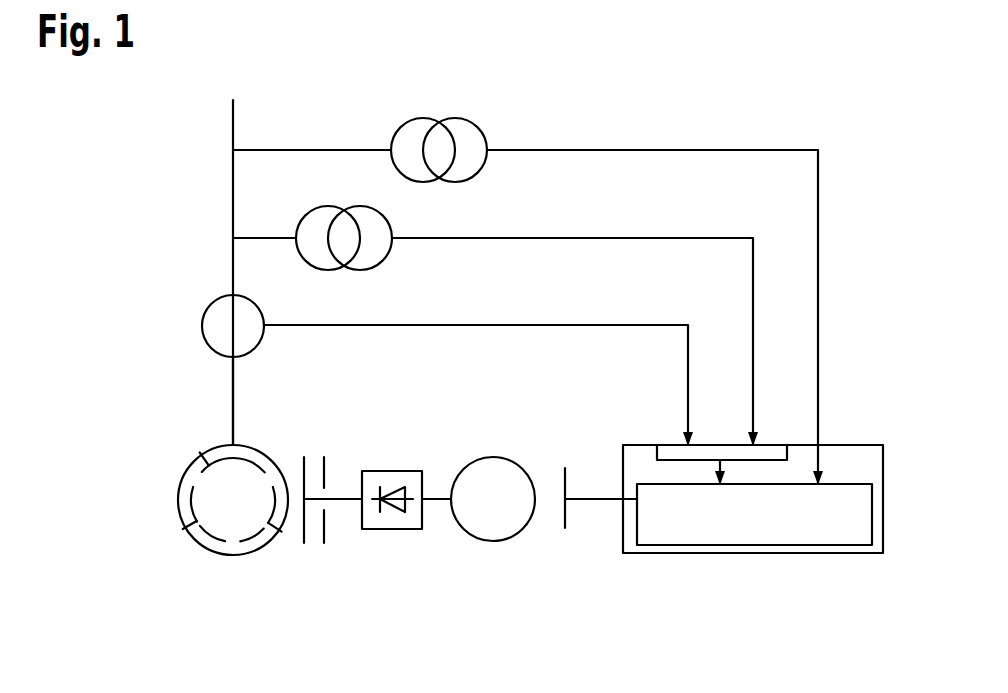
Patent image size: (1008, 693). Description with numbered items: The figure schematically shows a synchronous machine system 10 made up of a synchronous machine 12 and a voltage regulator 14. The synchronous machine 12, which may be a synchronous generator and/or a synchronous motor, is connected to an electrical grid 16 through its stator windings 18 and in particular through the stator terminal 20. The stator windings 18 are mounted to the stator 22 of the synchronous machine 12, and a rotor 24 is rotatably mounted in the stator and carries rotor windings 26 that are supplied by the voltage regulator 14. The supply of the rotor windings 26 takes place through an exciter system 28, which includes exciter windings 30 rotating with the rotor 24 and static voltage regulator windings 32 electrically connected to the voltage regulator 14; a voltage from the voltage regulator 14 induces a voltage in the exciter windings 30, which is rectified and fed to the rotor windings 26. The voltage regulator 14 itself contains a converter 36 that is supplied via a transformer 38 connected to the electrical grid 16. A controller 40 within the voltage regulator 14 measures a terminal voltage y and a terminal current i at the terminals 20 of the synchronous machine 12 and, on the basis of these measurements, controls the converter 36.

The synchronous machine system 10 is at (655, 108).
The synchronous machine 12 is at (200, 547).
The voltage regulator 14 is at (753, 557).
The electrical grid 16 is at (233, 127).
The stator windings 18 is at (200, 452).
The stator terminal 20 is at (233, 387).
The stator 22 is at (180, 493).
The rotor 24 is at (337, 563).
The rotor windings 26 is at (324, 470).
The exciter system 28 is at (442, 560).
The exciter windings 30 is at (472, 539).
The static voltage regulator windings 32 is at (565, 528).
The converter 36 is at (675, 545).
The transformer 38 is at (450, 108).
The controller 40 is at (758, 460).
The terminal voltage y is at (592, 238).
The terminal current i is at (592, 325).